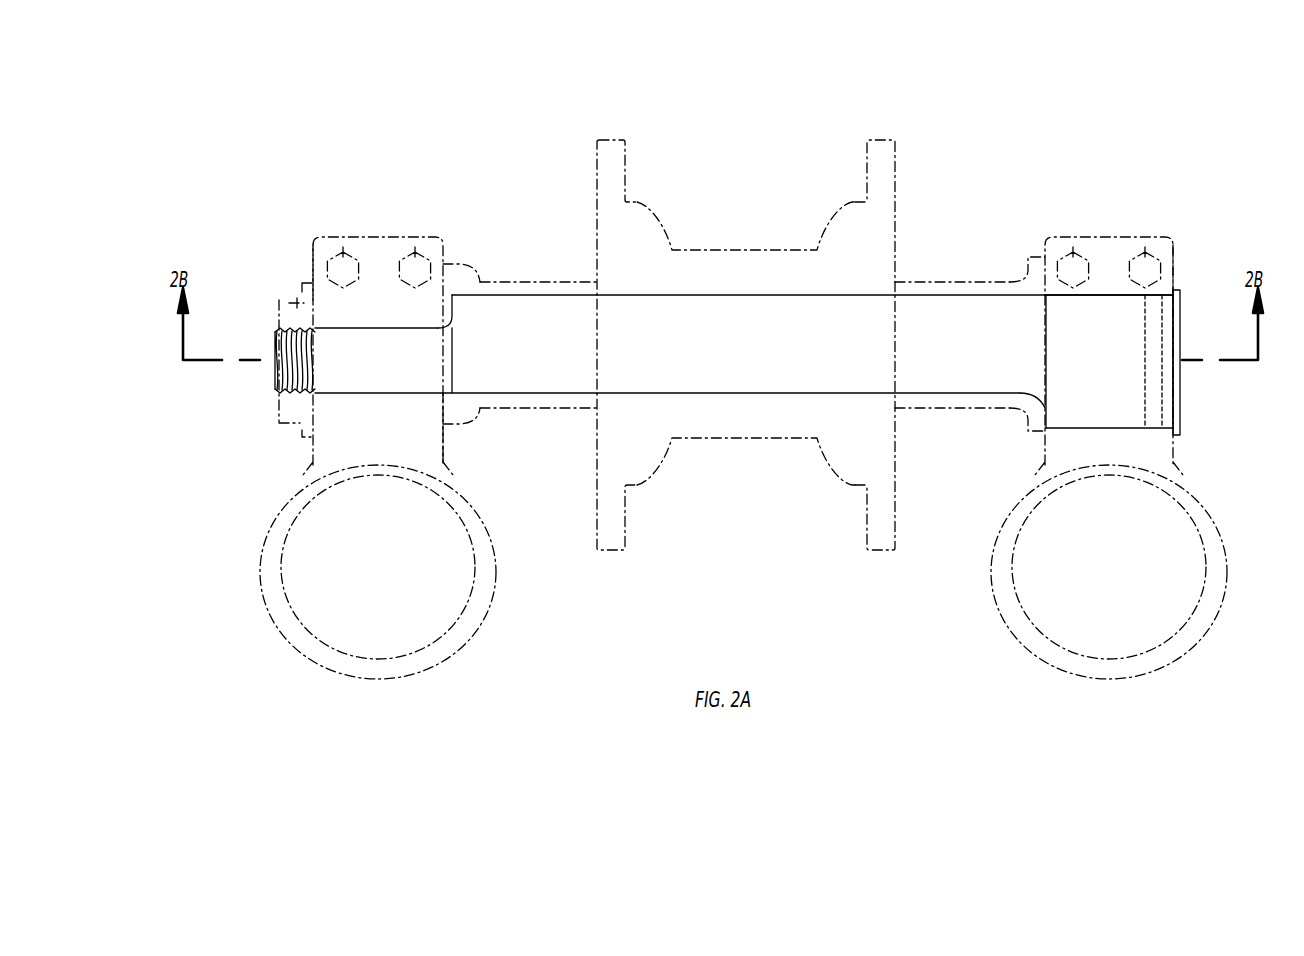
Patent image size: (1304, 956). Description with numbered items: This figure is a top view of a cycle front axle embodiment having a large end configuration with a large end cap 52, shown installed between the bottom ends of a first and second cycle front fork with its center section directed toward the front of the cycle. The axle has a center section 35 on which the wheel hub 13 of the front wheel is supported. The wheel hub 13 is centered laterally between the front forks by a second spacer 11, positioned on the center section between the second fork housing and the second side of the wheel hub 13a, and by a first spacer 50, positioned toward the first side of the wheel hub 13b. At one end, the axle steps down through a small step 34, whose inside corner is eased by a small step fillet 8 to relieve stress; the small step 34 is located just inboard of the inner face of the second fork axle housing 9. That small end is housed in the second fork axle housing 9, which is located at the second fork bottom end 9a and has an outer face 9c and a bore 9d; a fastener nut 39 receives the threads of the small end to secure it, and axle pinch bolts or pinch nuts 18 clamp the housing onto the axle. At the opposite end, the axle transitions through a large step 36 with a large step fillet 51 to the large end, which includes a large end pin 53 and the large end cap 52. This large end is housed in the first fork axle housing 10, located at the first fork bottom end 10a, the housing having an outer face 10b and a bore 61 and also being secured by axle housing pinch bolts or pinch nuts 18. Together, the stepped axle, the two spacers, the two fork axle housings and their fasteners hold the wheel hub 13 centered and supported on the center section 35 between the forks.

The small step fillet 8 is at (452, 328).
The second fork axle housing 9 is at (423, 237).
The second fork bottom end 9a is at (312, 471).
The outer face 9c is at (313, 258).
The bore 9d is at (400, 395).
The first fork axle housing 10 is at (1055, 236).
The first fork bottom end 10a is at (1178, 473).
The outer face 10b is at (1175, 276).
The second spacer 11 is at (523, 287).
The wheel hub 13 is at (777, 268).
The second side of the wheel hub 13a is at (597, 283).
The first side of the wheel hub 13b is at (895, 283).
The axle pinch bolts or pinch nuts 18 is at (415, 254).
The small step 34 is at (462, 304).
The center section 35 is at (708, 325).
The large step 36 is at (1043, 398).
The fastener nut 39 is at (295, 290).
The first spacer 50 is at (948, 280).
The large step fillet 51 is at (1047, 403).
The large end cap 52 is at (1182, 322).
The large end pin 53 is at (1155, 377).
The bore 61 is at (1078, 430).